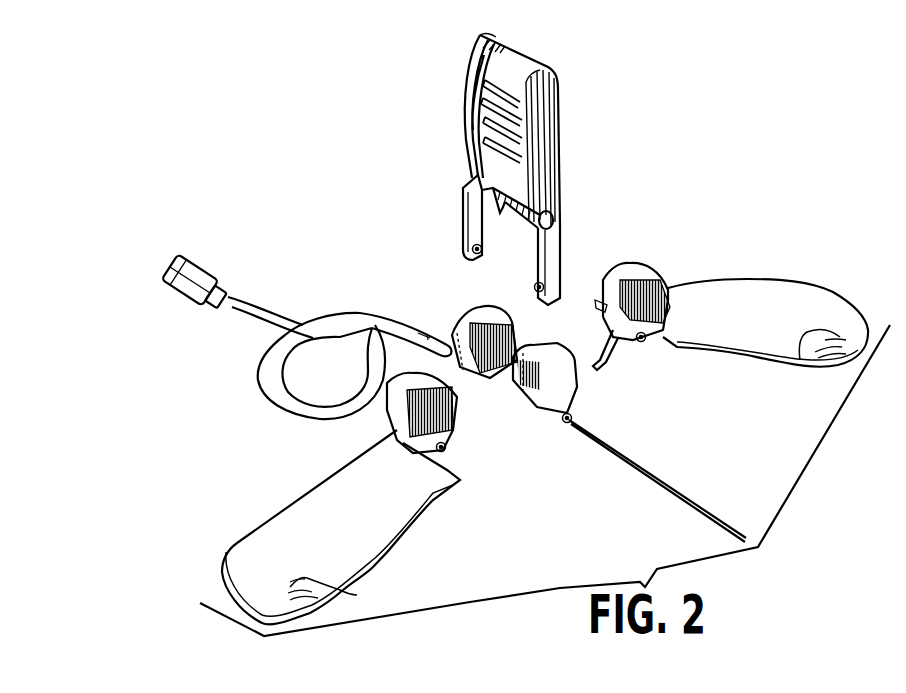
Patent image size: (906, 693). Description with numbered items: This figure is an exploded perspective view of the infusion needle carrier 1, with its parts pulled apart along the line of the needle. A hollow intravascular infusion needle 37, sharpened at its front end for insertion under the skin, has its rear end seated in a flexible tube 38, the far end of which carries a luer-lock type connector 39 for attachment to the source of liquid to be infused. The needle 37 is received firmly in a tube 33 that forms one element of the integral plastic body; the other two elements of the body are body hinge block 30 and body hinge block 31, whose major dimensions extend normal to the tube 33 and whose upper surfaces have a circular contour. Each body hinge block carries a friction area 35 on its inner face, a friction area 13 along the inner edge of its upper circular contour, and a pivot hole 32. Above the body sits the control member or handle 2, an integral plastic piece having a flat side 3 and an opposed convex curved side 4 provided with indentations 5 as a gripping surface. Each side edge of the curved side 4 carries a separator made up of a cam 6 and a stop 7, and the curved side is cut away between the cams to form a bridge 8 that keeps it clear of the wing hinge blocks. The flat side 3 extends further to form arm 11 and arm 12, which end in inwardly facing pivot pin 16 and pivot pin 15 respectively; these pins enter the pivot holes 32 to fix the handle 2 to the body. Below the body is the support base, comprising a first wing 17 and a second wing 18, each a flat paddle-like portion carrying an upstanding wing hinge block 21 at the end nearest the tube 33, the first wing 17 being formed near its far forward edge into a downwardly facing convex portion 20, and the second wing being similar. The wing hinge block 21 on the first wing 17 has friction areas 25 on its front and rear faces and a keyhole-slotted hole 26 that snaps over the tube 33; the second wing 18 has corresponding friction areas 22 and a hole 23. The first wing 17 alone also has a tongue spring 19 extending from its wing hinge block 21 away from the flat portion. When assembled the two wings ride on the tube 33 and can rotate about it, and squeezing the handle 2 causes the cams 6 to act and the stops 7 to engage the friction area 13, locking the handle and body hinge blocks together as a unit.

The infusion needle carrier 1 is at (512, 169).
The control member 2 is at (538, 56).
The flat side 3 is at (557, 137).
The convex curved side 4 is at (480, 100).
The indentations 5 is at (478, 122).
The cam 6 is at (551, 238).
The stop 7 is at (549, 213).
The bridge 8 is at (497, 216).
The arm 11 is at (557, 268).
The arm 12 is at (462, 222).
The friction area 13 is at (470, 308).
The pivot pin 15 is at (481, 250).
The pivot pin 16 is at (537, 285).
The first wing 17 is at (760, 300).
The second wing 18 is at (290, 522).
The tongue spring 19 is at (608, 358).
The convex portion 20 is at (357, 595).
The wing hinge block 21 is at (627, 272).
The friction areas 22 is at (455, 405).
The hole 23 is at (446, 449).
The friction areas 25 is at (657, 283).
The hole 26 is at (644, 341).
The body hinge block 30 is at (562, 388).
The body hinge block 31 is at (450, 322).
The pivot hole 32 is at (571, 420).
The tube 33 is at (447, 352).
The friction area 35 is at (513, 334).
The infusion needle 37 is at (658, 477).
The flexible tube 38 is at (262, 382).
The connector 39 is at (185, 278).